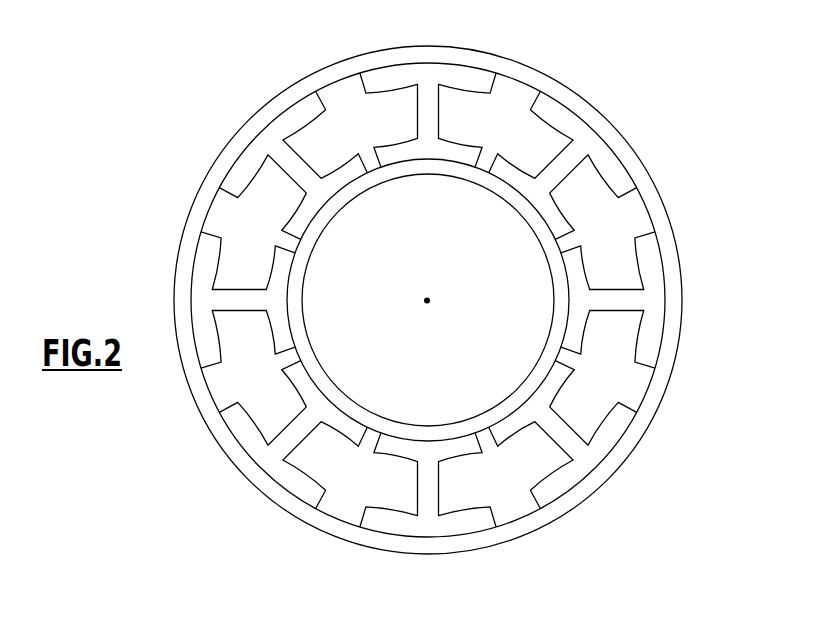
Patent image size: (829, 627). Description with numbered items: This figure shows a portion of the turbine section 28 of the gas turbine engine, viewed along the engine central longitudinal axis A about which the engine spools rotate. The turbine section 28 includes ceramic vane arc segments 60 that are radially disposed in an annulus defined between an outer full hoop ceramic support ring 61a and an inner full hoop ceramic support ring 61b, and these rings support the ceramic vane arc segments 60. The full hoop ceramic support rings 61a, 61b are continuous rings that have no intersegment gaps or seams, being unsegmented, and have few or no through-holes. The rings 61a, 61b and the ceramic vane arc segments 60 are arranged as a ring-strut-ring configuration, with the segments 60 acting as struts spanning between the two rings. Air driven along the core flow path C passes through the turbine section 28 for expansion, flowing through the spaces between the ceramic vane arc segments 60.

The turbine section 28 is at (150, 419).
The ceramic vane arc segments 60 is at (378, 100).
The outer full hoop ceramic support ring 61a is at (631, 450).
The inner full hoop ceramic support ring 61b is at (523, 392).
The core flow path C is at (251, 234).
The engine central longitudinal axis A is at (428, 301).